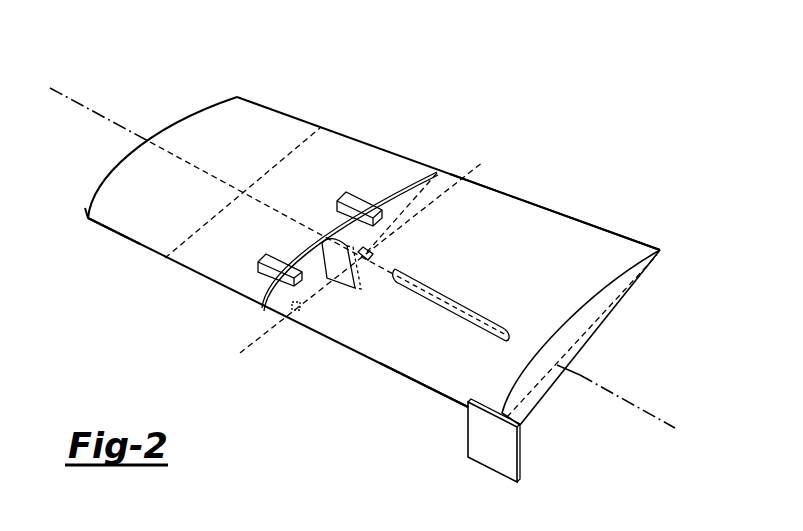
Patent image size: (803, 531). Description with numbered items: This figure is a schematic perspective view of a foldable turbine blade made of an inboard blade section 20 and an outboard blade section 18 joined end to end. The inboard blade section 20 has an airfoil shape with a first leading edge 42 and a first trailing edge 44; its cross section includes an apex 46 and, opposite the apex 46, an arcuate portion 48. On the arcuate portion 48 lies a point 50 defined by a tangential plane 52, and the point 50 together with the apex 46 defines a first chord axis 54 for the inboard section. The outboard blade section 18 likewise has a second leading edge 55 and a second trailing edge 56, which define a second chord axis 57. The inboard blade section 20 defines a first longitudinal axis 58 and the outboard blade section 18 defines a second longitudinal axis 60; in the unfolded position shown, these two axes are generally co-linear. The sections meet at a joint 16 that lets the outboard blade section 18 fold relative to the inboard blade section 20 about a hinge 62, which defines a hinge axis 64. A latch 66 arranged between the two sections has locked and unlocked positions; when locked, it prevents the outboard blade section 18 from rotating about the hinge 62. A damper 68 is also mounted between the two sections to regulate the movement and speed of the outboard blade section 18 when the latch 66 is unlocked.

The joint 16 is at (256, 310).
The outboard blade section 18 is at (100, 211).
The inboard blade section 20 is at (440, 387).
The first leading edge 42 is at (373, 370).
The first trailing edge 44 is at (525, 202).
The apex 46 is at (663, 248).
The arcuate portion 48 is at (512, 390).
The point 50 is at (498, 433).
The tangential plane 52 is at (520, 458).
The first chord axis 54 is at (613, 298).
The second leading edge 55 is at (137, 247).
The second trailing edge 56 is at (277, 112).
The second chord axis 57 is at (182, 248).
The first longitudinal axis 58 is at (625, 415).
The second longitudinal axis 60 is at (110, 115).
The hinge 62 is at (330, 291).
The hinge axis 64 is at (468, 170).
The latch 66 is at (337, 203).
The damper 68 is at (432, 290).